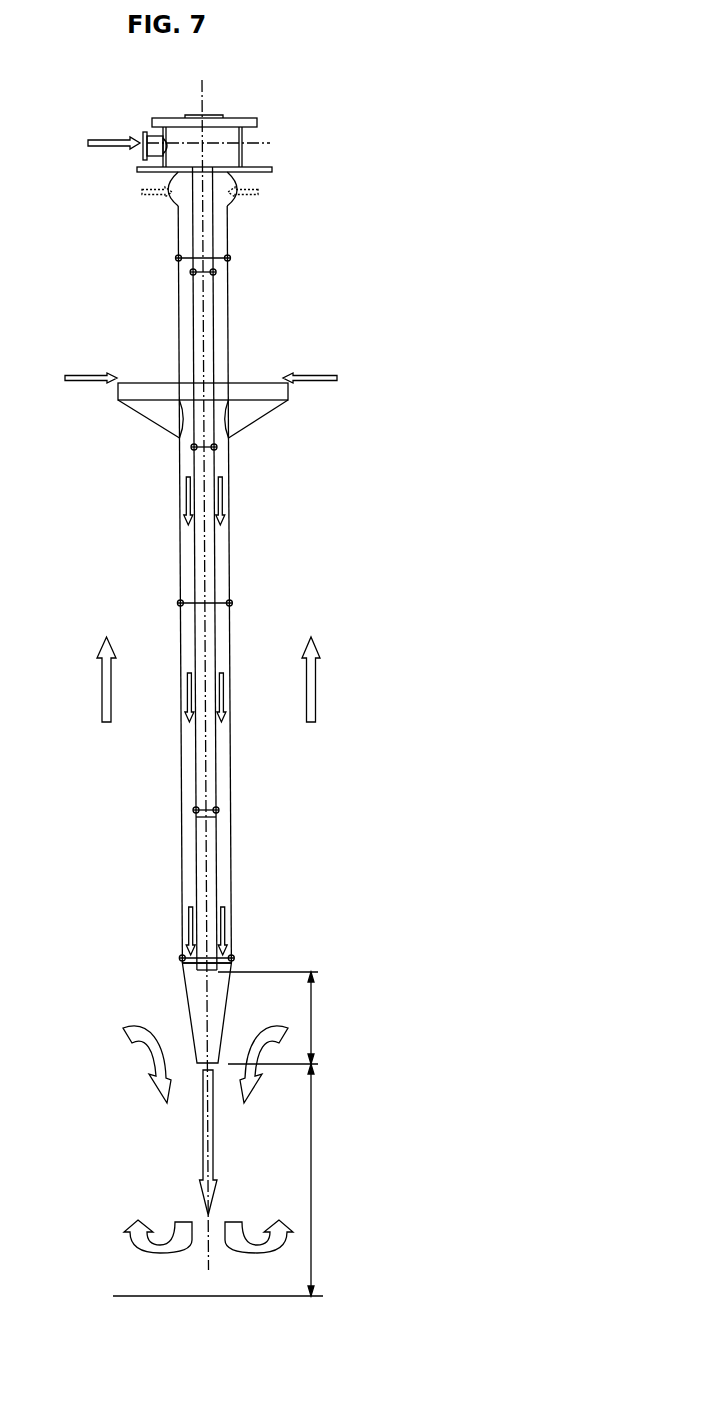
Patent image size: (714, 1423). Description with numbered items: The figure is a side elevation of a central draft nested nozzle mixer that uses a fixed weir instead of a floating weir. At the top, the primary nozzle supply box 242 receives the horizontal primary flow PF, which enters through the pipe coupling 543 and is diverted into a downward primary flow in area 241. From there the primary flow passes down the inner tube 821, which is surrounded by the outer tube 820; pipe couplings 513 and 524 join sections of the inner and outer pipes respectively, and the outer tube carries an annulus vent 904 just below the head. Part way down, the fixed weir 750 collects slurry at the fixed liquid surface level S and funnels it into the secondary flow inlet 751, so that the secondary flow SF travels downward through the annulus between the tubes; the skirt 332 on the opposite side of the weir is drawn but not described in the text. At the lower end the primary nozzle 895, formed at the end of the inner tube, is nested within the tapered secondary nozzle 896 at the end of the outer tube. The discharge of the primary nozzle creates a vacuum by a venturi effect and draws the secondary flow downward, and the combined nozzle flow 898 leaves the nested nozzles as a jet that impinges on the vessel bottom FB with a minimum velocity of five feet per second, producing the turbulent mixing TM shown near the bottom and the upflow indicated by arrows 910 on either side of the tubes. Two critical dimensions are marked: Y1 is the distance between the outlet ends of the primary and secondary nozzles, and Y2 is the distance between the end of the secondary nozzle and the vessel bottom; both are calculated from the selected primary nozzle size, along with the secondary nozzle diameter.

The primary nozzle supply box 242 is at (180, 122).
The downward primary flow area 241 is at (195, 133).
The primary flow PF is at (94, 145).
The pipe coupling 543 is at (145, 153).
The annulus vent 904 is at (177, 195).
The pipe coupling 524 is at (175, 258).
The pipe coupling 513 is at (190, 272).
The inner tube 821 is at (210, 283).
The outer tube 820 is at (228, 303).
The liquid surface S is at (216, 378).
The skirt 332 is at (142, 417).
The fixed weir 750 is at (285, 386).
The secondary flow inlet 751 is at (223, 422).
The secondary flow SF is at (220, 505).
The upflow arrows 910 is at (313, 682).
The primary nozzle 895 is at (210, 962).
The secondary nozzle 896 is at (222, 1052).
The combined nozzle flow 898 is at (212, 1155).
The nozzle outlet spacing dimension Y1 is at (281, 1018).
The secondary nozzle height dimension Y2 is at (326, 1180).
The turbulent mixing TM is at (270, 1242).
The vessel bottom FB is at (218, 1296).